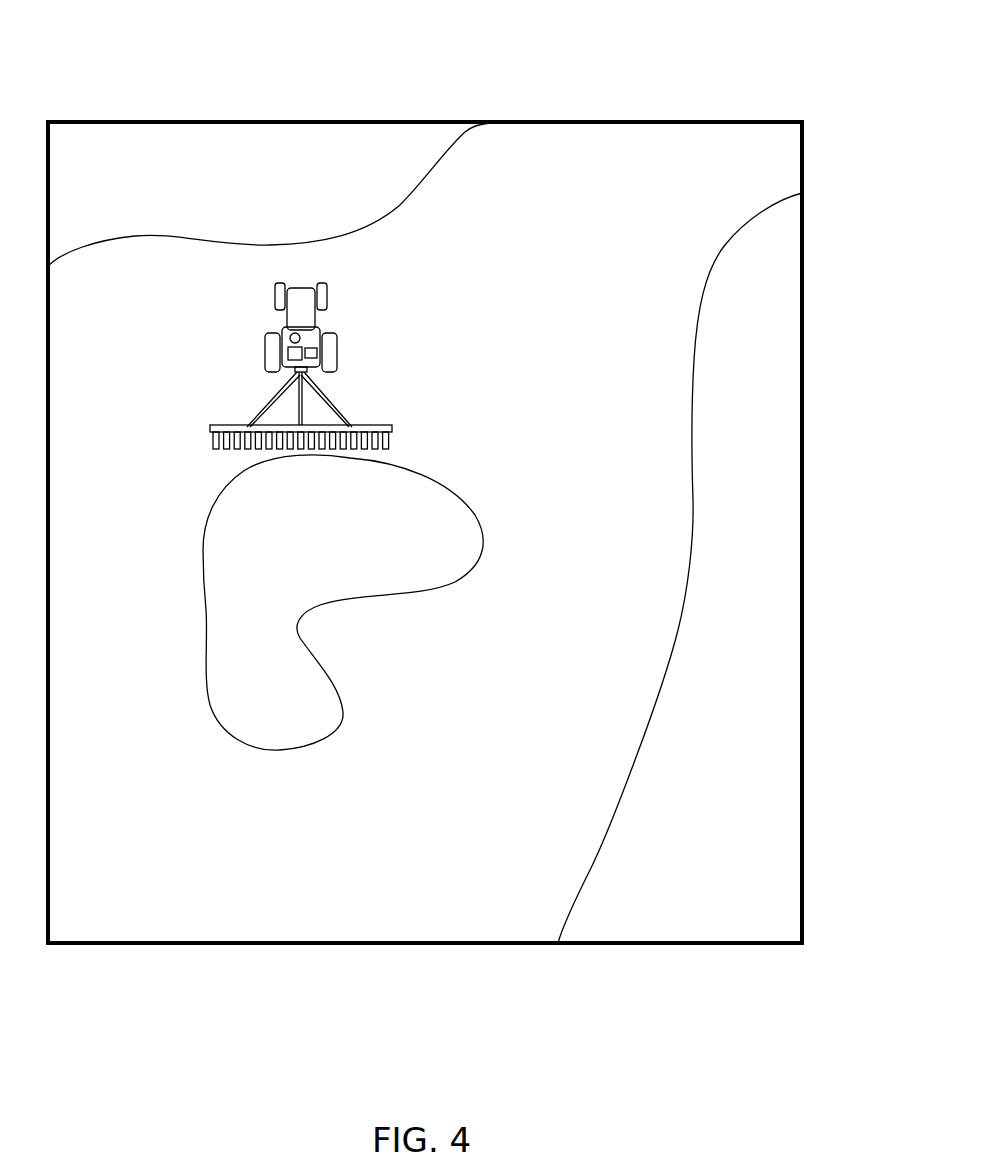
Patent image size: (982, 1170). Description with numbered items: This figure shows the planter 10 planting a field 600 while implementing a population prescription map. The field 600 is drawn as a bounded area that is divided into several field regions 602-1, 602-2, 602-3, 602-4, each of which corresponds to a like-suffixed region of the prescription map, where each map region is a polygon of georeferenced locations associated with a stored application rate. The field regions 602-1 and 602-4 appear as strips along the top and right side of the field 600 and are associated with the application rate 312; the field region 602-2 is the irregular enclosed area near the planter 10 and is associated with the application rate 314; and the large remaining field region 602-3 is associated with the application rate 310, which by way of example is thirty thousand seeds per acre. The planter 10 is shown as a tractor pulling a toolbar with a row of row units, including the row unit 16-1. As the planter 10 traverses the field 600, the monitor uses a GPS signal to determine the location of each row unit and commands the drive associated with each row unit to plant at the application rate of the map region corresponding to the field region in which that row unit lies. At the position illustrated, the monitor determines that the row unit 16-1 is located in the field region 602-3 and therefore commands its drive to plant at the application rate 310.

The field 600 is at (788, 275).
The field region 602-1 is at (148, 158).
The field region 602-2 is at (310, 713).
The field region 602-3 is at (235, 867).
The field region 602-4 is at (671, 865).
The application rate 310 is at (396, 815).
The application rate 312 is at (425, 525).
The application rate 314 is at (358, 602).
The planter 10 is at (235, 365).
The row unit 16-1 is at (220, 450).